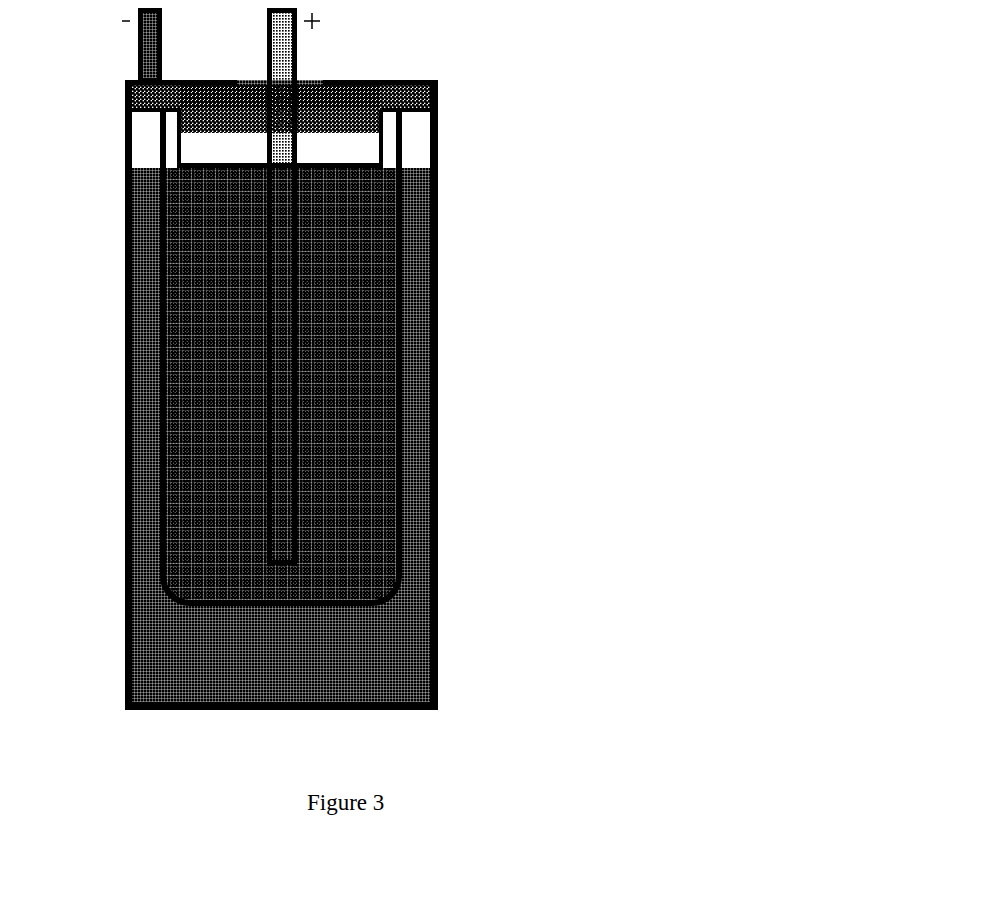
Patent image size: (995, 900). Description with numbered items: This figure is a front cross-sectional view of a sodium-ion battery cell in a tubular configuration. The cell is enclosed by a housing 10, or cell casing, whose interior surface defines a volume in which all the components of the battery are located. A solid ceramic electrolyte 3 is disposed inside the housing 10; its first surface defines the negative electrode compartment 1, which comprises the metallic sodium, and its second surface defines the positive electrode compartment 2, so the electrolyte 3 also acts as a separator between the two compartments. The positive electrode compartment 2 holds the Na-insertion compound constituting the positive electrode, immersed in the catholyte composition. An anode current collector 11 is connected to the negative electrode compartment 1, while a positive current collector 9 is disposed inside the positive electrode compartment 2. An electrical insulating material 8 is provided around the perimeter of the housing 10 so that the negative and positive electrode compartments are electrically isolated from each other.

The negative electrode compartment 1 is at (415, 508).
The positive electrode compartment 2 is at (328, 337).
The solid ceramic electrolyte 3 is at (402, 243).
The electrical insulating material 8 is at (333, 108).
The positive current collector 9 is at (285, 147).
The housing 10 is at (438, 588).
The anode current collector 11 is at (140, 30).